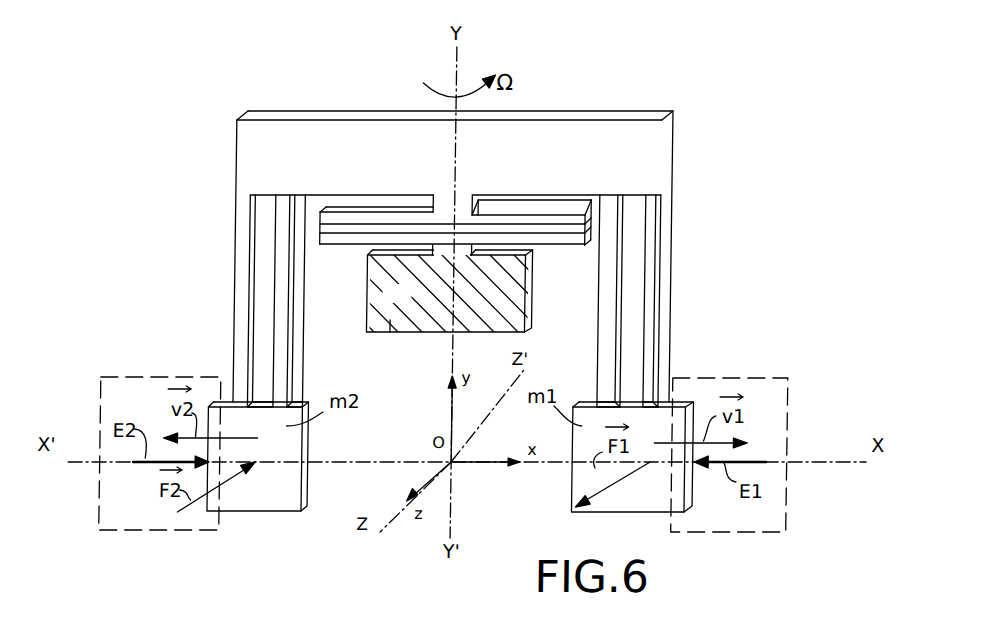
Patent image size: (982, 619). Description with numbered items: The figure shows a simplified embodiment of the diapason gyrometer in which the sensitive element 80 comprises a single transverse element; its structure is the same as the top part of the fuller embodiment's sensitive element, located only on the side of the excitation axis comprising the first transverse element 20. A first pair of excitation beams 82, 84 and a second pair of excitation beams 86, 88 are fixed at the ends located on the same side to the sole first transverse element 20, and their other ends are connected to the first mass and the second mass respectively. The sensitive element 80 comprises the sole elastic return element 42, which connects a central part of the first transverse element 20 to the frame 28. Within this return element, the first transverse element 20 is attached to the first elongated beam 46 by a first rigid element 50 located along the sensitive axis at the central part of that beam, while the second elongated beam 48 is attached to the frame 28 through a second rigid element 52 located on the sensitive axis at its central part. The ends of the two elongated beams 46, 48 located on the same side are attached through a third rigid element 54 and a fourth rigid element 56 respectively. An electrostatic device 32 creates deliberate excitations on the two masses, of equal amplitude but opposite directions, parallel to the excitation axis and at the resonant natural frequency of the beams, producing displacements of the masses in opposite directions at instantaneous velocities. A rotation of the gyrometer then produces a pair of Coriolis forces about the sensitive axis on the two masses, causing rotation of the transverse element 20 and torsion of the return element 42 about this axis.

The first transverse element 20 is at (300, 137).
The sensitive element 80 is at (607, 88).
The first rigid element 50 is at (461, 210).
The third rigid element 54 is at (352, 227).
The first elongated beam 46 is at (549, 222).
The fourth rigid element 56 is at (588, 212).
The second elongated beam 48 is at (575, 245).
The elastic return element 42 is at (551, 256).
The excitation beam 88 is at (246, 266).
The excitation beam 86 is at (282, 297).
The second rigid element 52 is at (440, 252).
The frame 28 is at (393, 322).
The excitation beam 84 is at (659, 346).
The excitation beam 82 is at (606, 347).
The electrostatic device 32 is at (150, 377).